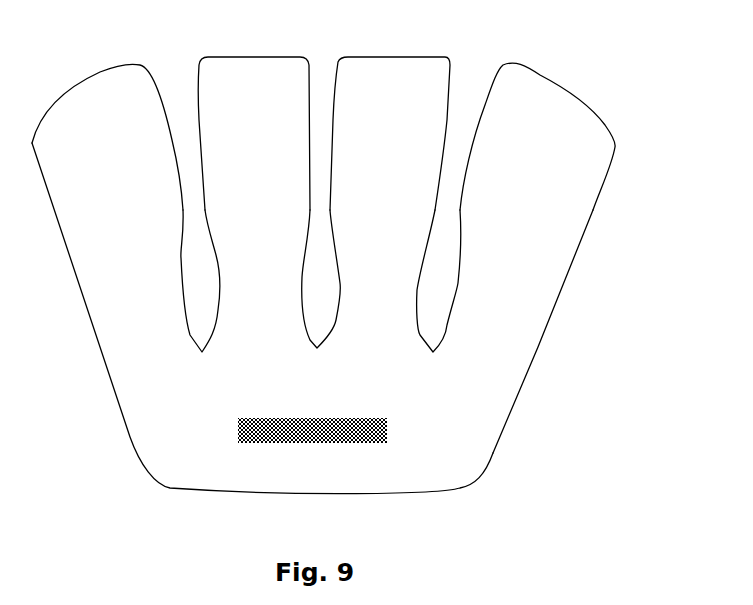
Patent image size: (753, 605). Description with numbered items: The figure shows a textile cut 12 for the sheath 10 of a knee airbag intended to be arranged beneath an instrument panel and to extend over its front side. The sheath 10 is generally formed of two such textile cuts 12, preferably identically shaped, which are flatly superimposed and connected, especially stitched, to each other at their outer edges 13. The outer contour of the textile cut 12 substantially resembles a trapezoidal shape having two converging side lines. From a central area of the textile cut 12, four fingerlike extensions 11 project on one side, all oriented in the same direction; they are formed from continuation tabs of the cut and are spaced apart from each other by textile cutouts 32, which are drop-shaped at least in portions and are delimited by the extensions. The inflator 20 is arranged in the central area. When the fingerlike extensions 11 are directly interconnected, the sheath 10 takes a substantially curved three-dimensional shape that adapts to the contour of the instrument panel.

The sheath 10 is at (364, 254).
The fingerlike extensions 11 is at (135, 88).
The textile cut 12 is at (455, 402).
The outer edges 13 is at (538, 347).
The inflator 20 is at (370, 445).
The textile cutouts 32 is at (182, 88).